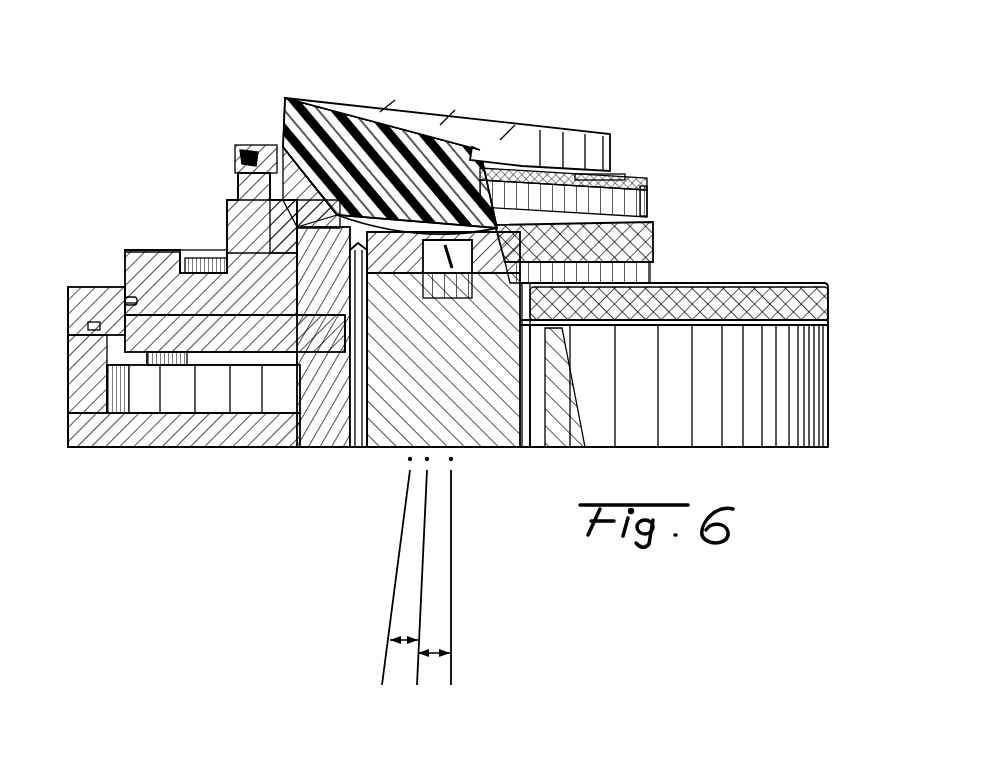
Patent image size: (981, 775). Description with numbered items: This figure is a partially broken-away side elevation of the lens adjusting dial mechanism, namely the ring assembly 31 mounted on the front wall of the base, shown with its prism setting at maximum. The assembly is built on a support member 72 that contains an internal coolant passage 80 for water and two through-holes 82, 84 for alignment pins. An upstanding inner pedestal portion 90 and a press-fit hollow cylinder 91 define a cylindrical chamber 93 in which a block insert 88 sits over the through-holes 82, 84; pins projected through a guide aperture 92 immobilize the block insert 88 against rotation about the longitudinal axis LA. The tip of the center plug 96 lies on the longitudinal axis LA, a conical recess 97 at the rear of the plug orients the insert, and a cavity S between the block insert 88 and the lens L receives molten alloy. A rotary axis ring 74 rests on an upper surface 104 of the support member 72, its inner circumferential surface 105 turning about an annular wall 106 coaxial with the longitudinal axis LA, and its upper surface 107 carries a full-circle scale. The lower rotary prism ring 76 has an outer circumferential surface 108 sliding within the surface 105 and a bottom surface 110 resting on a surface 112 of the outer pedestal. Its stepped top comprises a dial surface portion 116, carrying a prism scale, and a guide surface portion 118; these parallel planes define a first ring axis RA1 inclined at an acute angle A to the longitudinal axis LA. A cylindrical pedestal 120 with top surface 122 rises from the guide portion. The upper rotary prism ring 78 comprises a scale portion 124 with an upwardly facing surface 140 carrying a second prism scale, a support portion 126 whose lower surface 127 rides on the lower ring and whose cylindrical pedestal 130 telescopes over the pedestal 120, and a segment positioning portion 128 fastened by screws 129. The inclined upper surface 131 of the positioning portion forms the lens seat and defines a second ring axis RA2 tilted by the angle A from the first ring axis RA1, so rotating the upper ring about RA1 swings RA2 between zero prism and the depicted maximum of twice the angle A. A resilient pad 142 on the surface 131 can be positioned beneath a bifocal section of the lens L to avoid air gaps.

The ring assembly 31 is at (224, 94).
The support member 72 is at (66, 425).
The rotary axis ring 74 is at (58, 313).
The lower rotary prism ring 76 is at (114, 252).
The upper rotary prism ring 78 is at (668, 243).
The internal coolant passage 80 is at (243, 403).
The through-hole 82 is at (370, 440).
The through-hole 84 is at (548, 433).
The block insert 88 is at (372, 160).
The inner pedestal portion 90 is at (318, 415).
The hollow cylinder 91 is at (292, 340).
The guide aperture 92 is at (428, 135).
The cylindrical chamber 93 is at (392, 185).
The center plug 96 is at (495, 162).
The conical recess 97 is at (455, 300).
The upper surface 104 is at (79, 395).
The inner circumferential surface 105 is at (135, 303).
The annular wall 106 is at (98, 325).
The upper surface 107 is at (100, 284).
The outer circumferential surface 108 is at (128, 272).
The bottom surface 110 is at (126, 340).
The surface 112 is at (203, 375).
The dial surface portion 116 is at (140, 250).
The guide surface portion 118 is at (200, 253).
The cylindrical pedestal 120 is at (285, 240).
The top surface 122 is at (290, 108).
The scale portion 124 is at (220, 203).
The support portion 126 is at (224, 164).
The lower surface 127 is at (315, 132).
The segment positioning portion 128 is at (253, 134).
The screw 129 is at (652, 213).
The cylindrical pedestal 130 is at (252, 202).
The upper surface 131 is at (645, 190).
The upwardly facing surface 140 is at (205, 255).
The resilient pad 142 is at (608, 176).
The lens L is at (572, 116).
The cavity S is at (347, 150).
The acute angle A is at (407, 640).
The first ring axis RA1 is at (417, 675).
The second ring axis RA2 is at (383, 667).
The longitudinal axis LA is at (452, 672).